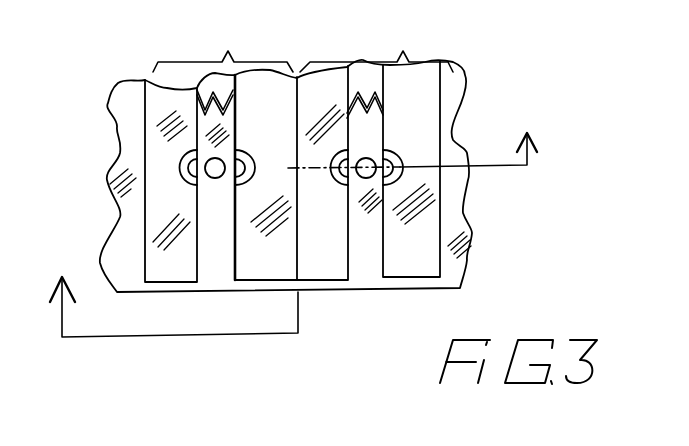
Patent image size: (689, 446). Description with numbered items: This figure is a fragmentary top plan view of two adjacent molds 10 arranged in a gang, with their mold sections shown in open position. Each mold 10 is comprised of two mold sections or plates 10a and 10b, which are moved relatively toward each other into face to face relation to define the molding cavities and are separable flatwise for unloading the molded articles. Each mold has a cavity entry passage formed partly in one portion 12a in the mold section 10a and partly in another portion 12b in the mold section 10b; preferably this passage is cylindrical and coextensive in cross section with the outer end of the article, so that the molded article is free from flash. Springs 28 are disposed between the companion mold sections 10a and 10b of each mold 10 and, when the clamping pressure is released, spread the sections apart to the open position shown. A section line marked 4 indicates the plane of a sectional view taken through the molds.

The mold 10 is at (303, 48).
The mold section 10a is at (175, 270).
The mold section 10b is at (252, 270).
The entry passage portion 12a is at (183, 165).
The entry passage portion 12b is at (233, 179).
The spring 28 is at (358, 92).
The section line 4- 4 is at (530, 82).